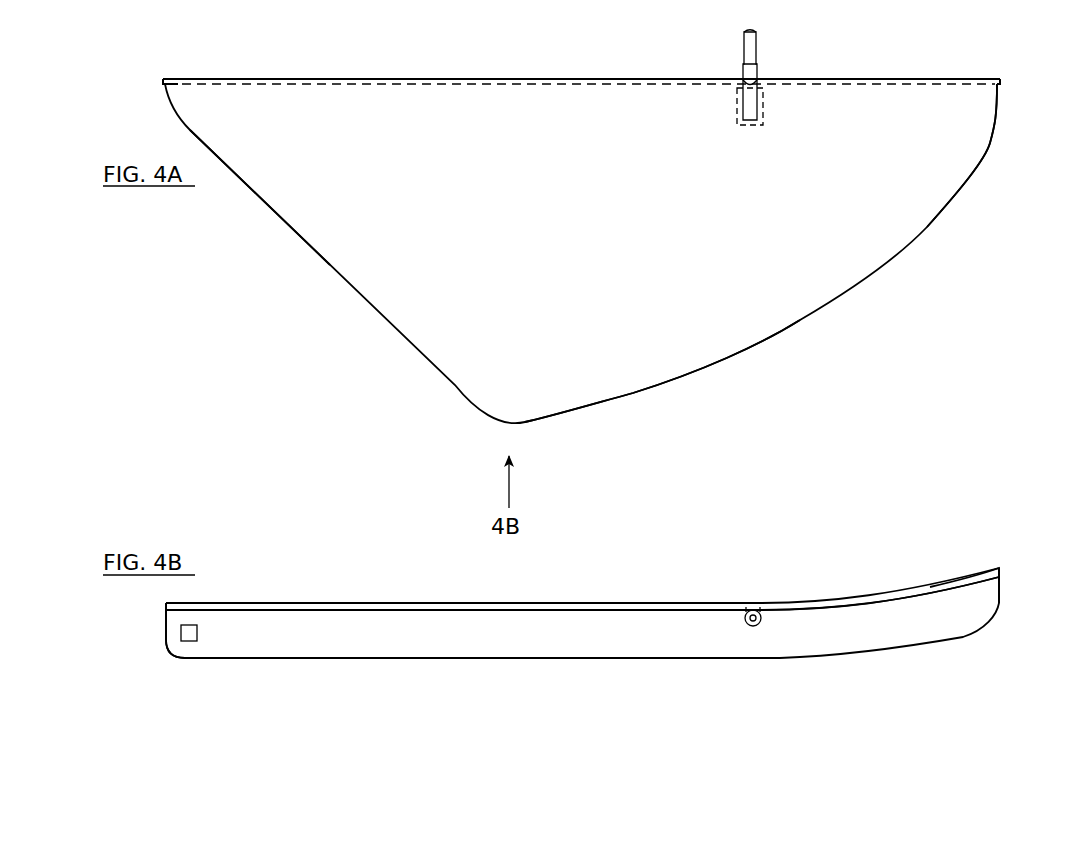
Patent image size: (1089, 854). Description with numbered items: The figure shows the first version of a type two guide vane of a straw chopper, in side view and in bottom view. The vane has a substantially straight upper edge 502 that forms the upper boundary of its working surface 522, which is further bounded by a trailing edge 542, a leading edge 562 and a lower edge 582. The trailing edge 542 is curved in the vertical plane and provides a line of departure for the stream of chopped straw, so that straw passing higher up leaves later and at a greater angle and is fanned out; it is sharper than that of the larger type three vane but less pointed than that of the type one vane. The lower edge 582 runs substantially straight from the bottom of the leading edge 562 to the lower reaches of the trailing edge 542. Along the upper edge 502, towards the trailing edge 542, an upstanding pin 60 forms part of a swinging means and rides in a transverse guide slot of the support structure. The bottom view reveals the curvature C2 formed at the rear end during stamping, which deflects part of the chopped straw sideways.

In FIG. 4A, the upper edge 502 is at (390, 79).
In FIG. 4B, the upper edge 502 is at (335, 645).
In FIG. 4A, the working surface 522 is at (598, 229).
In FIG. 4A, the trailing edge 542 is at (988, 132).
In FIG. 4B, the trailing edge 542 is at (975, 570).
In FIG. 4A, the leading edge 562 is at (320, 257).
In FIG. 4B, the leading edge 562 is at (165, 629).
In FIG. 4A, the lower edge 582 is at (633, 393).
In FIG. 4B, the lower edge 582 is at (623, 605).
In FIG. 4A, the upstanding pin 60 is at (758, 62).
In FIG. 4B, the curvature C2 is at (882, 593).